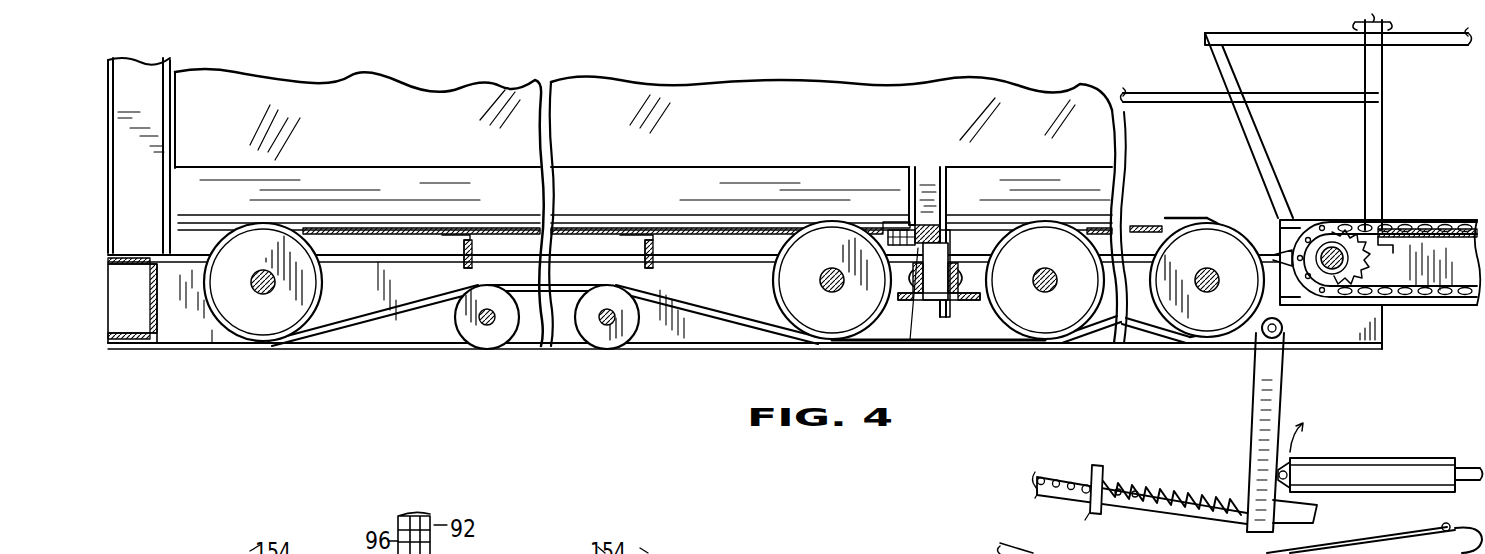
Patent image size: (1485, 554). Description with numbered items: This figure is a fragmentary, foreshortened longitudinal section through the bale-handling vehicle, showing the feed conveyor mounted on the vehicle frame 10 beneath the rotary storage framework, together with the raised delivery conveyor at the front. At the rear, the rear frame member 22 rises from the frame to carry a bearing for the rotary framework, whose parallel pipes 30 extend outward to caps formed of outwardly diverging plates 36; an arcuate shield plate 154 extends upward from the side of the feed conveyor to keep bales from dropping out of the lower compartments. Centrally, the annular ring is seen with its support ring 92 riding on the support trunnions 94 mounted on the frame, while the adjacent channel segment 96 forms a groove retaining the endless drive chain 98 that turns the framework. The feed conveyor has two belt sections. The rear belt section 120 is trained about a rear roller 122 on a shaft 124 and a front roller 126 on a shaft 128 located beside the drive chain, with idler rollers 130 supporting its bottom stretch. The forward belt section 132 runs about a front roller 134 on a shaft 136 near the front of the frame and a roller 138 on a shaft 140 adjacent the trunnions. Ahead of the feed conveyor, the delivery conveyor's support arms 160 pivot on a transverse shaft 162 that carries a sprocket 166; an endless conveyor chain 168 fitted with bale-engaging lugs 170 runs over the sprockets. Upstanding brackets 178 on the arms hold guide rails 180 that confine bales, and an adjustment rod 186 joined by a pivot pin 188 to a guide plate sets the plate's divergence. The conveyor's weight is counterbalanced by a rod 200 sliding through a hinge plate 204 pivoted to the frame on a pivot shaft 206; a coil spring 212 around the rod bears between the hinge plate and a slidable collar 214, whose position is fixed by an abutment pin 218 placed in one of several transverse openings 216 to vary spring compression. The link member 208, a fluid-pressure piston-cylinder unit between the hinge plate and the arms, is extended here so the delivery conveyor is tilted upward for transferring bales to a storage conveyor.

The frame 10 is at (560, 333).
The rear frame member 22 is at (127, 93).
The parallel pipes 30 is at (928, 173).
The outwardly diverging plates 36 is at (575, 93).
The support ring 92 is at (937, 222).
The support trunnions 94 is at (937, 302).
The channel segment 96 is at (900, 232).
The drive chain 98 is at (912, 248).
The rear belt section 120 is at (345, 325).
The rear roller 122 is at (263, 300).
The shaft 124 is at (258, 292).
The front roller 126 is at (832, 299).
The shaft 128 is at (835, 293).
The idler rollers 130 is at (590, 333).
The forward belt section 132 is at (1153, 333).
The front roller 134 is at (1207, 263).
The shaft 136 is at (1210, 268).
The roller 138 is at (1045, 299).
The shaft 140 is at (1048, 293).
The arcuate shield plate 154 is at (188, 195).
The support arms 160 is at (1380, 284).
The transverse shaft 162 is at (1334, 248).
The sprocket 166 is at (1371, 232).
The conveyor chain 168 is at (1385, 281).
The lugs 170 is at (1277, 253).
The upstanding brackets 178 is at (1255, 132).
The guide rails 180 is at (1418, 40).
The adjustment rod 186 is at (1318, 524).
The pivot pin 188 is at (1444, 524).
The rod 200 is at (1138, 488).
The hinge plate 204 is at (1265, 425).
The pivot shaft 206 is at (1281, 340).
The link member 208 is at (1378, 468).
The coil spring 212 is at (1206, 487).
The collar 214 is at (1100, 470).
The transverse openings 216 is at (1071, 483).
The abutment pin 218 is at (1065, 497).